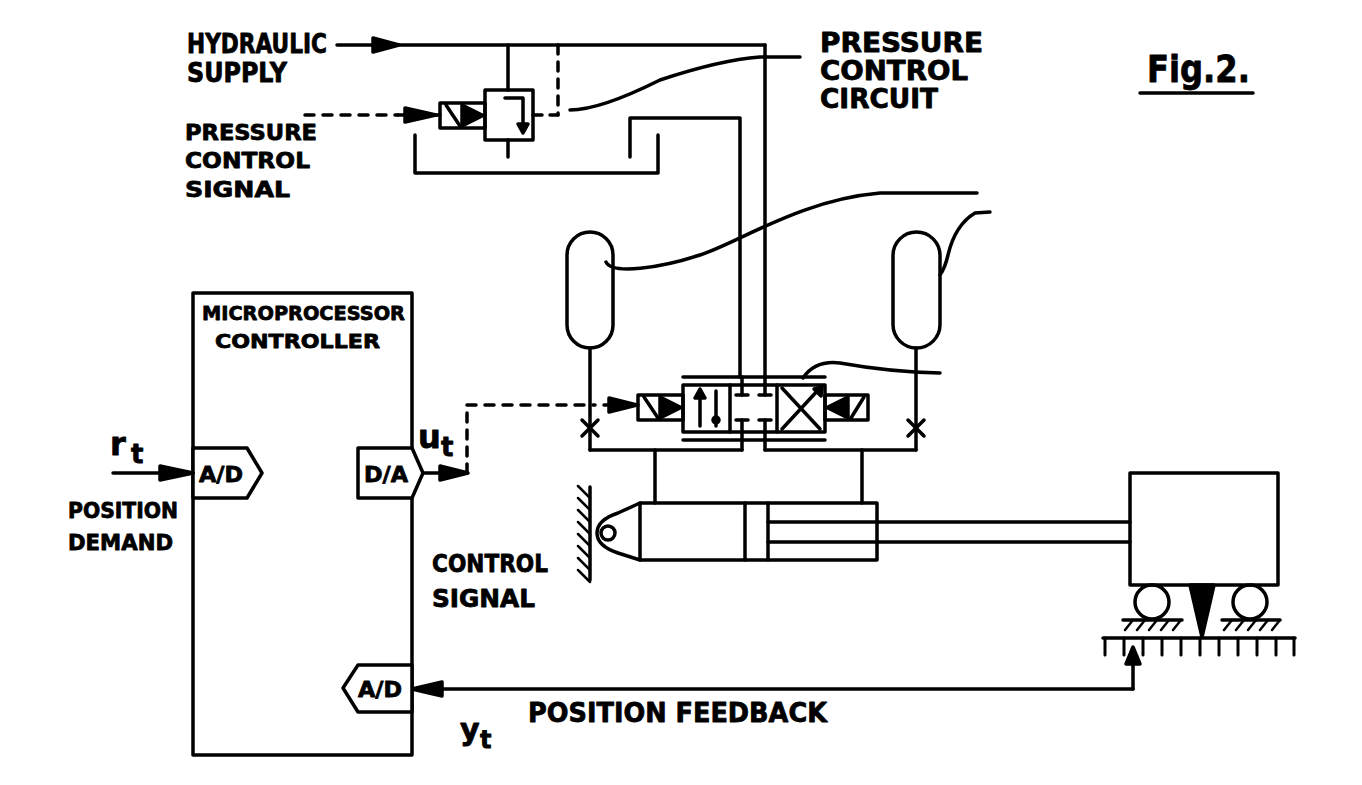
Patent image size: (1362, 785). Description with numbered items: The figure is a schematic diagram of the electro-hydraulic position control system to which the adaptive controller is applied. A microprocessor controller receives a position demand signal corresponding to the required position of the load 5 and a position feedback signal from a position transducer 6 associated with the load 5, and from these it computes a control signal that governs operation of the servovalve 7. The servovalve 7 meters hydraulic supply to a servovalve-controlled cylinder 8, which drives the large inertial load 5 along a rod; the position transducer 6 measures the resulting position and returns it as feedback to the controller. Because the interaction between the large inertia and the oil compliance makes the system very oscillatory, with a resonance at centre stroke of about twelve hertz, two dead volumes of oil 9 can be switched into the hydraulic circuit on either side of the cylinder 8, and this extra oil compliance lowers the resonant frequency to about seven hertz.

The load 5 is at (1242, 473).
The position transducer 6 is at (1102, 643).
The servovalve 7 is at (858, 393).
The servovalve-controlled cylinder 8 is at (848, 555).
The dead volumes of oil 9 is at (583, 308).